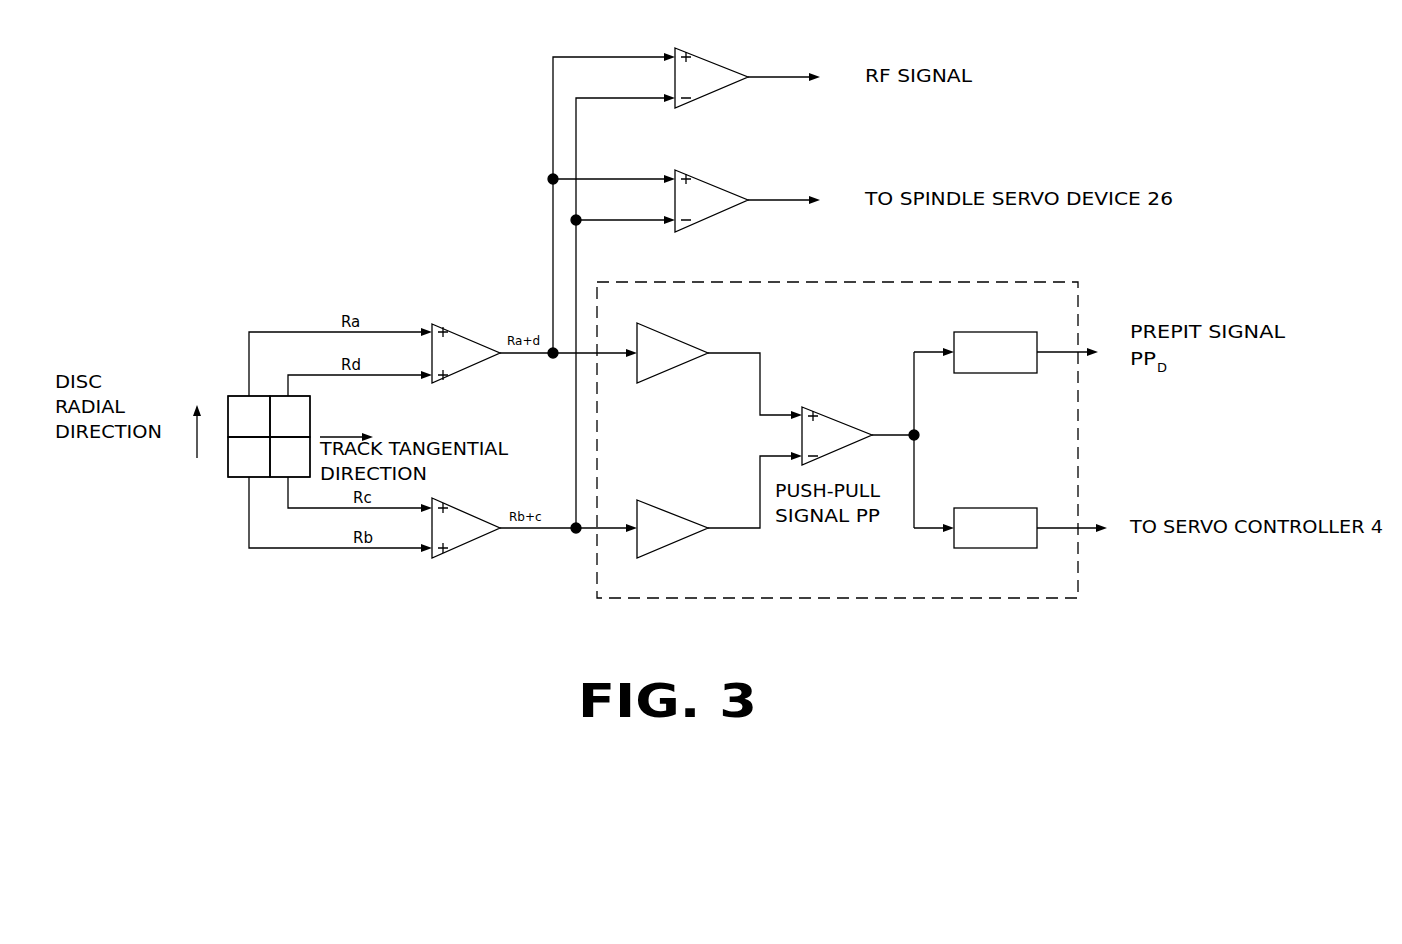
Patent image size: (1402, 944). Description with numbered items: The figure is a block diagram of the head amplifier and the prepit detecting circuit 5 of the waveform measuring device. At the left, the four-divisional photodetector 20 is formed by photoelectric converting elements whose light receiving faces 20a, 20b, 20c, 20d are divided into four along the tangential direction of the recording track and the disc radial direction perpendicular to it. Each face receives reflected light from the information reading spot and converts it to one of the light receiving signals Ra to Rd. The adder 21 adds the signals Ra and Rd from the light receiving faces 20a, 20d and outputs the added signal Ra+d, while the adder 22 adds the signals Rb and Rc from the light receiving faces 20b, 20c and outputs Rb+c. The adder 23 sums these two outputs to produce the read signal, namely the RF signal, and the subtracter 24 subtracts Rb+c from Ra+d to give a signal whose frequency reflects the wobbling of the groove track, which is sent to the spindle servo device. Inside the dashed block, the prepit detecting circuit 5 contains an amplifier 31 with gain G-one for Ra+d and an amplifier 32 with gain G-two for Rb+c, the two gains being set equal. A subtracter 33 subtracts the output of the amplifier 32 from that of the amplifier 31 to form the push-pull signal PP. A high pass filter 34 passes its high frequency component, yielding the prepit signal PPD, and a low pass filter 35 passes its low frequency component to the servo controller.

The prepit detecting circuit 5 is at (597, 575).
The 4-divisional photodetector 20 is at (316, 428).
The light receiving face 20a is at (236, 396).
The light receiving face 20b is at (236, 477).
The light receiving face 20c is at (282, 477).
The light receiving face 20d is at (282, 396).
The adder 21 is at (485, 342).
The adder 22 is at (485, 517).
The adder 23 is at (710, 65).
The subtracter 24 is at (710, 188).
The amplifier 31 is at (683, 340).
The amplifier 32 is at (683, 517).
The subtracter 33 is at (840, 423).
The high pass filter 34 is at (992, 330).
The low pass filter 35 is at (992, 506).